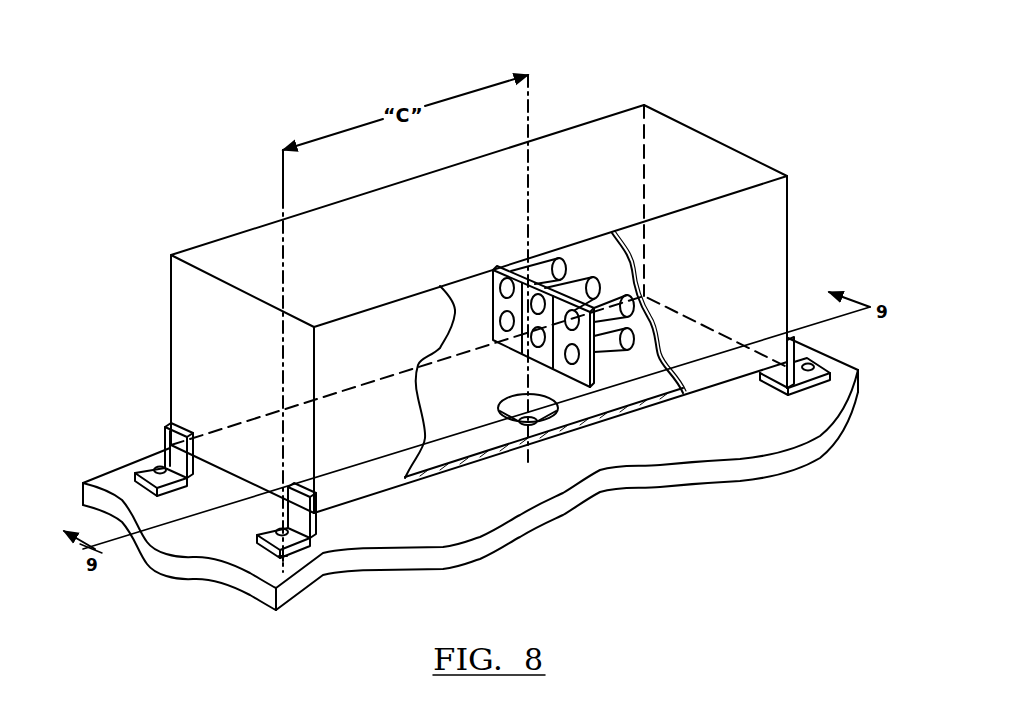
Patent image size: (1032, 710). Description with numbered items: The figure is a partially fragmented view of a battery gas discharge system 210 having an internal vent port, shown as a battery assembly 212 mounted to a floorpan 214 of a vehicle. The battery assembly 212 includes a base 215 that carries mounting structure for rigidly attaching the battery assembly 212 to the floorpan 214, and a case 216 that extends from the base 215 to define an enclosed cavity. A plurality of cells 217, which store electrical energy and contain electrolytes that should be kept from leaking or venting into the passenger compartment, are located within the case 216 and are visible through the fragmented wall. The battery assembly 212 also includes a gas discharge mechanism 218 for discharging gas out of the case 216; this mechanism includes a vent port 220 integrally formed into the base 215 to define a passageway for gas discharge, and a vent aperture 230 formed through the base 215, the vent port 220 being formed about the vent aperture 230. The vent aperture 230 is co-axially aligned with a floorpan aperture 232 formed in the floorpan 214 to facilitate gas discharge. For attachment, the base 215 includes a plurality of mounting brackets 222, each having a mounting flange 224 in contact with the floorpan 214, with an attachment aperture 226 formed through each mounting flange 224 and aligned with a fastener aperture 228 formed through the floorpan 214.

The battery gas discharge system 210 is at (784, 65).
The battery assembly 212 is at (742, 142).
The floorpan 214 is at (685, 443).
The base 215 is at (214, 495).
The case 216 is at (751, 227).
The cells 217 is at (545, 275).
The gas discharge mechanism 218 is at (494, 402).
The vent port 220 is at (577, 415).
The mounting brackets 222 is at (162, 450).
The mounting flange 224 is at (264, 546).
The attachment aperture 226 is at (155, 469).
The fastener aperture 228 is at (284, 560).
The vent aperture 230 is at (537, 427).
The floorpan aperture 232 is at (500, 432).